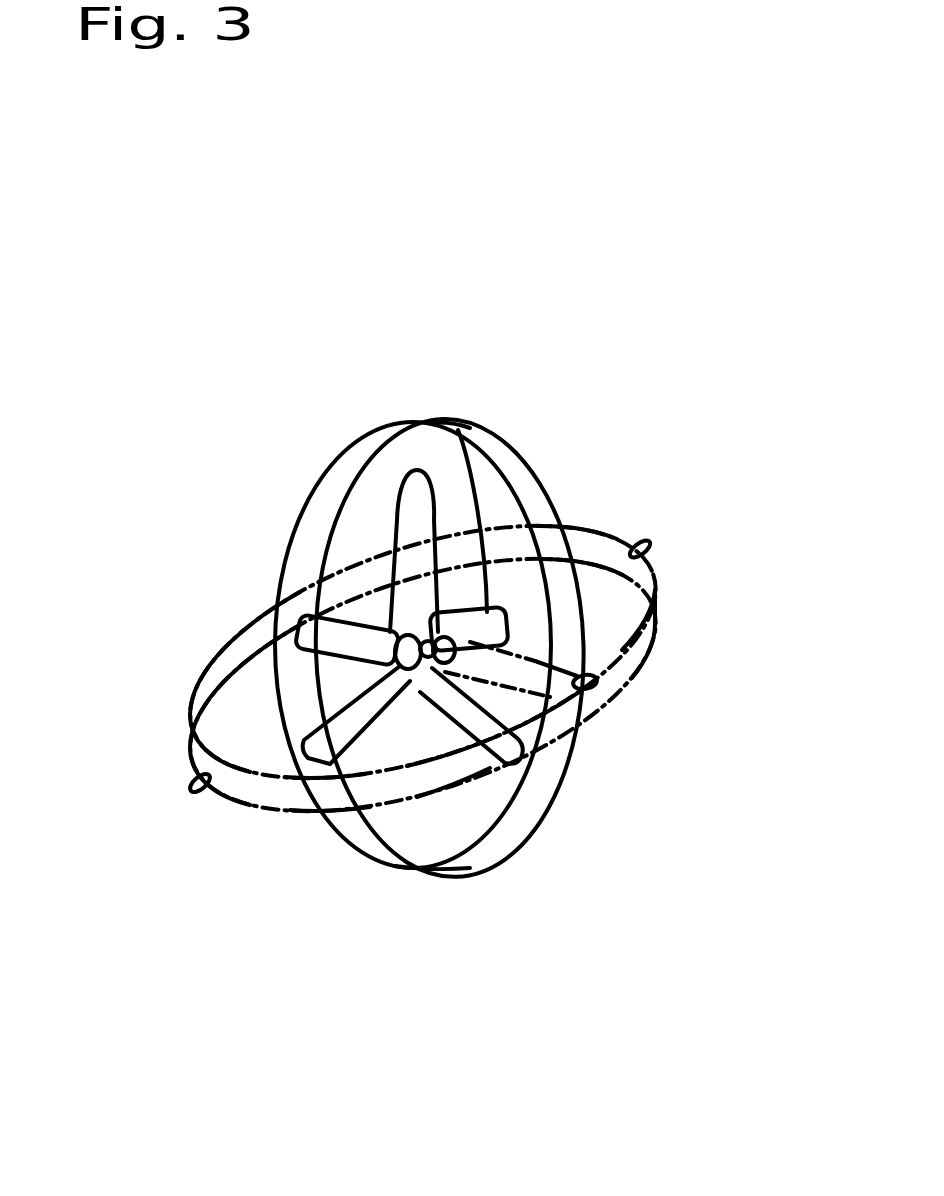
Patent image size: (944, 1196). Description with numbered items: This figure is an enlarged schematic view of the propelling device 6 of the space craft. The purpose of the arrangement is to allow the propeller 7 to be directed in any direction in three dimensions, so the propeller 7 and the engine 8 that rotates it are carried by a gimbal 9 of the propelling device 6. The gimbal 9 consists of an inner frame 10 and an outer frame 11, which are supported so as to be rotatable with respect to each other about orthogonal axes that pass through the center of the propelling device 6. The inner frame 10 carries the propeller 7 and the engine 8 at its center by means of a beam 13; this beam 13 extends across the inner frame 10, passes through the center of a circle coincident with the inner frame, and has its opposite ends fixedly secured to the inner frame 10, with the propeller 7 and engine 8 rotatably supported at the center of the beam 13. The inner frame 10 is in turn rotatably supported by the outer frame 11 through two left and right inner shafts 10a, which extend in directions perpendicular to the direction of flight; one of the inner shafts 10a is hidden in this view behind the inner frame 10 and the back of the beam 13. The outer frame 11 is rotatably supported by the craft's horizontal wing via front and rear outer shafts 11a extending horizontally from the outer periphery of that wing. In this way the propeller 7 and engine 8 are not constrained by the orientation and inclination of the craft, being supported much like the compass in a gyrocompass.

The propelling device 6 is at (610, 467).
The propeller 7 is at (355, 850).
The engine 8 is at (465, 432).
The gimbal 9 is at (540, 852).
The inner frame 10 is at (560, 777).
The inner shafts 10a is at (597, 685).
The outer frame 11 is at (650, 655).
The outer shafts 11a is at (651, 540).
The beam 13 is at (395, 630).